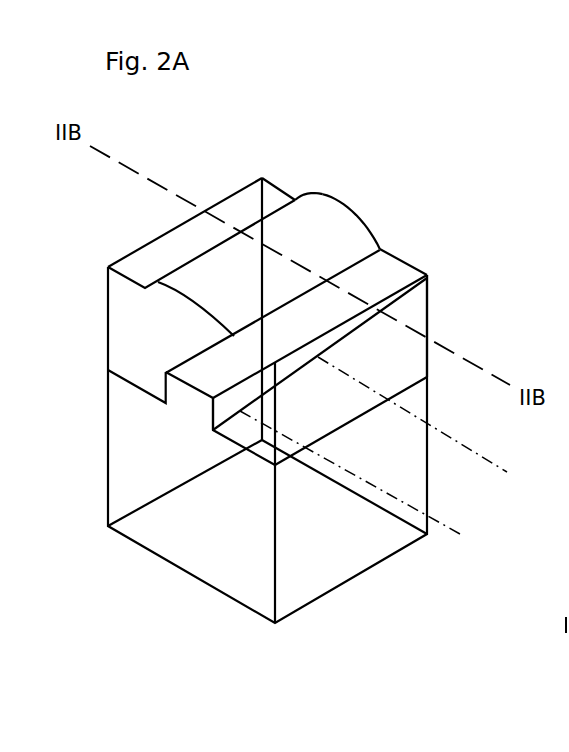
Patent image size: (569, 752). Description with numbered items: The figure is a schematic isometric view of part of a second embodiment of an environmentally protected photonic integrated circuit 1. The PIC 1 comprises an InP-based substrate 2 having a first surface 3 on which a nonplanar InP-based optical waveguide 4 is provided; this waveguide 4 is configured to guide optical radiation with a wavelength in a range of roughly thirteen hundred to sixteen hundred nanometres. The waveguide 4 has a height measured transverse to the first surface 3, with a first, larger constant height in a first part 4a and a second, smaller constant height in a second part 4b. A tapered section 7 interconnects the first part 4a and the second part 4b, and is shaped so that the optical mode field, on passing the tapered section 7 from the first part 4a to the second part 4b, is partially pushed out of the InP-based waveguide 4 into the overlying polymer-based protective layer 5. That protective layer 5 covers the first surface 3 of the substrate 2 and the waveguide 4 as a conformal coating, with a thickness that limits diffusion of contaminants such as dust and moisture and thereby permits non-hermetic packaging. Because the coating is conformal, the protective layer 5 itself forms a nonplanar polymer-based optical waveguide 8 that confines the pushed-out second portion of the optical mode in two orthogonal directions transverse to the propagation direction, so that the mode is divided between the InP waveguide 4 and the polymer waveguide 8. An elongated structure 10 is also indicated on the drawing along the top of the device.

The environmentally protected photonic integrated circuit (PIC) 1 is at (410, 150).
The InP-based substrate 2 is at (333, 557).
The first surface of the InP-based substrate 3 is at (133, 371).
The nonplanar InP-based optical waveguide 4 is at (178, 358).
The first part of the InP-based optical waveguide 4a is at (223, 410).
The second part of the InP-based optical waveguide 4b is at (340, 342).
The polymer-based protective layer 5 is at (412, 305).
The tapered section of the InP-based optical waveguide 7 is at (507, 473).
The nonplanar polymer-based optical waveguide 8 is at (309, 187).
The elongated structure 10 is at (350, 230).